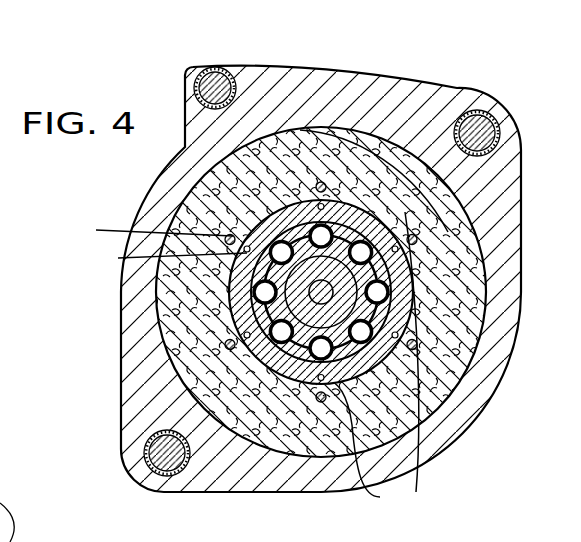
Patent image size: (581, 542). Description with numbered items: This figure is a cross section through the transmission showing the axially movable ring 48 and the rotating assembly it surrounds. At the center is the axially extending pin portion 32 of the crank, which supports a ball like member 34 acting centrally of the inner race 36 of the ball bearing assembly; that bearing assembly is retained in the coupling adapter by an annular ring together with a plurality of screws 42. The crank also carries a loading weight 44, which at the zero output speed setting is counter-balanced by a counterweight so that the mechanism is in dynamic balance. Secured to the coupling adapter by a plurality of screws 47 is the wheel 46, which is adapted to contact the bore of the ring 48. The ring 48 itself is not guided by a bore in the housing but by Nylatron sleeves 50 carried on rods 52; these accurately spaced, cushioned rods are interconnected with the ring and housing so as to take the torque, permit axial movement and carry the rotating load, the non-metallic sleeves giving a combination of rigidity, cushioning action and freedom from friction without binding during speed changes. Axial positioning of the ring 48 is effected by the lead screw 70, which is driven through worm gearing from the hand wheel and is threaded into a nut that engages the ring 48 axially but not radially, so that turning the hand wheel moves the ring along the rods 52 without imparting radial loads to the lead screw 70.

The axially extending pin portion 32 is at (315, 284).
The ball like member 34 is at (302, 345).
The inner race 36 is at (379, 224).
The screws 42 is at (262, 322).
The loading weight 44 is at (514, 537).
The wheel 46 is at (452, 345).
The screws 47 is at (415, 238).
The axially movable ring 48 is at (400, 102).
The sleeves 50 is at (491, 113).
The rods 52 is at (477, 128).
The lead screw 70 is at (196, 90).